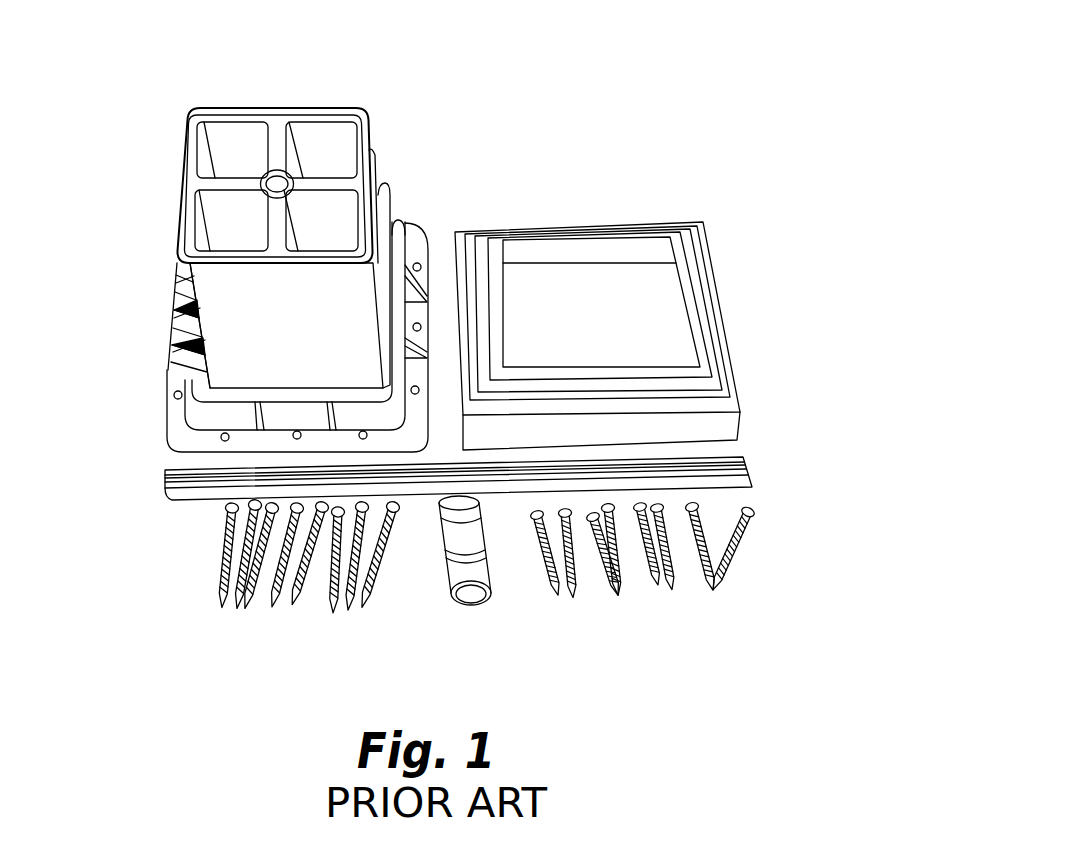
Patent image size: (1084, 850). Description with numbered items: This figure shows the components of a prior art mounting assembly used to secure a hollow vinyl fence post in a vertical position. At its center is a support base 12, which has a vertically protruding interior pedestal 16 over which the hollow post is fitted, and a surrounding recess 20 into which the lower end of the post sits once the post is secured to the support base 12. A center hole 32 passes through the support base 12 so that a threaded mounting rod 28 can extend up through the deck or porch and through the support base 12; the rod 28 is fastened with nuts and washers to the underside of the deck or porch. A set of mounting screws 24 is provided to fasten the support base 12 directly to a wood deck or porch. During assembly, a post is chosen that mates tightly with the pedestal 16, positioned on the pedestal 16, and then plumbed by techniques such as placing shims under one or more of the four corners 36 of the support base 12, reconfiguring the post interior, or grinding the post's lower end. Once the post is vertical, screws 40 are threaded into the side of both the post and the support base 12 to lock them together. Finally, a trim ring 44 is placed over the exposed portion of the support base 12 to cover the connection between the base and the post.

The support base 12 is at (375, 202).
The interior pedestal 16 is at (300, 329).
The surrounding recess 20 is at (198, 378).
The mounting screws 24 is at (330, 578).
The threaded mounting rod 28 is at (758, 478).
The center hole 32 is at (281, 183).
The corners 36 is at (422, 223).
The screws 40 is at (747, 552).
The trim ring 44 is at (723, 338).